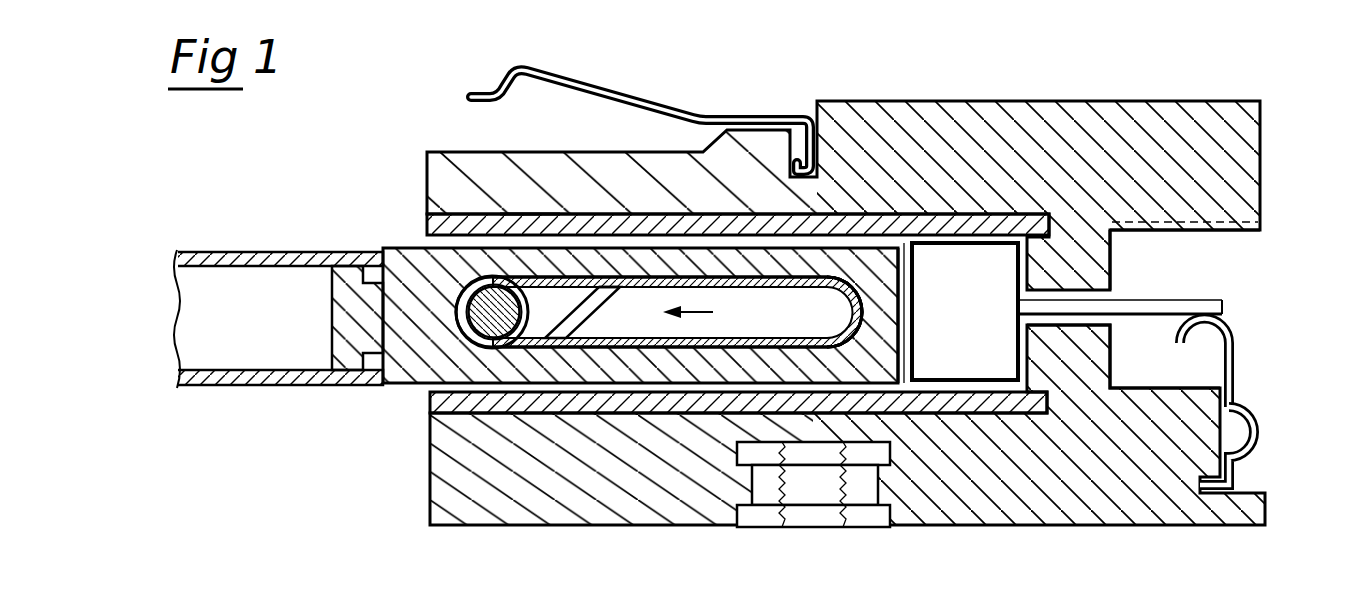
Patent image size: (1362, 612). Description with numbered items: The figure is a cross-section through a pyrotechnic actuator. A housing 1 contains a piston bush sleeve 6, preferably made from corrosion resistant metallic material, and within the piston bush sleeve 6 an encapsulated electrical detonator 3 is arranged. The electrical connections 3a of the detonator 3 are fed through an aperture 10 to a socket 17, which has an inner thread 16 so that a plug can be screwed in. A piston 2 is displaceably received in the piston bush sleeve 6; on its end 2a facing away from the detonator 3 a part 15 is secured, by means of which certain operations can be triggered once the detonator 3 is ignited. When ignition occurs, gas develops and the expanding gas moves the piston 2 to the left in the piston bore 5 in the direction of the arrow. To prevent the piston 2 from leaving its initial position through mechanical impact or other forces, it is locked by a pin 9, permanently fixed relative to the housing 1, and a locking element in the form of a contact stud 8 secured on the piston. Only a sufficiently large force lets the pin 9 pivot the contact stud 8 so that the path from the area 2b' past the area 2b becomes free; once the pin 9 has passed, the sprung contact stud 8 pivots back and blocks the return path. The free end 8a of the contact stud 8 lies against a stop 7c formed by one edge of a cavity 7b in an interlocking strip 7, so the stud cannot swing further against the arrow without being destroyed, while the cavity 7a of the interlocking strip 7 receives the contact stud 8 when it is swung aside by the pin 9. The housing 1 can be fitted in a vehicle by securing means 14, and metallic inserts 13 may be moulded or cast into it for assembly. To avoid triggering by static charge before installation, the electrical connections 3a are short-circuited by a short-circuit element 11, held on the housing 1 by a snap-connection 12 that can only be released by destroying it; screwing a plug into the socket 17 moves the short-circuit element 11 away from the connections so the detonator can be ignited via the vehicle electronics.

The housing 1 is at (948, 130).
The piston 2 is at (862, 265).
The end of the piston 2a is at (403, 386).
The area 2b is at (677, 207).
The area 2b' is at (738, 177).
The electrical detonator 3 is at (970, 365).
The electrical connections 3a is at (1224, 307).
The piston bore 5 is at (905, 387).
The piston bush sleeve 6 is at (500, 420).
The interlocking strip 7 is at (689, 358).
The cavity 7a is at (628, 333).
The cavity 7b is at (641, 288).
The stop 7c is at (560, 298).
The contact stud 8 is at (598, 302).
The free end of the contact stud 8a is at (622, 289).
The pin 9 is at (458, 285).
The aperture 10 is at (1078, 327).
The short-circuit element 11 is at (1228, 322).
The snap-connection 12 is at (1262, 433).
The inserts 13 is at (806, 530).
The securing means 14 is at (530, 68).
The part 15 is at (290, 251).
The inner thread 16 is at (1238, 230).
The socket 17 is at (1216, 262).